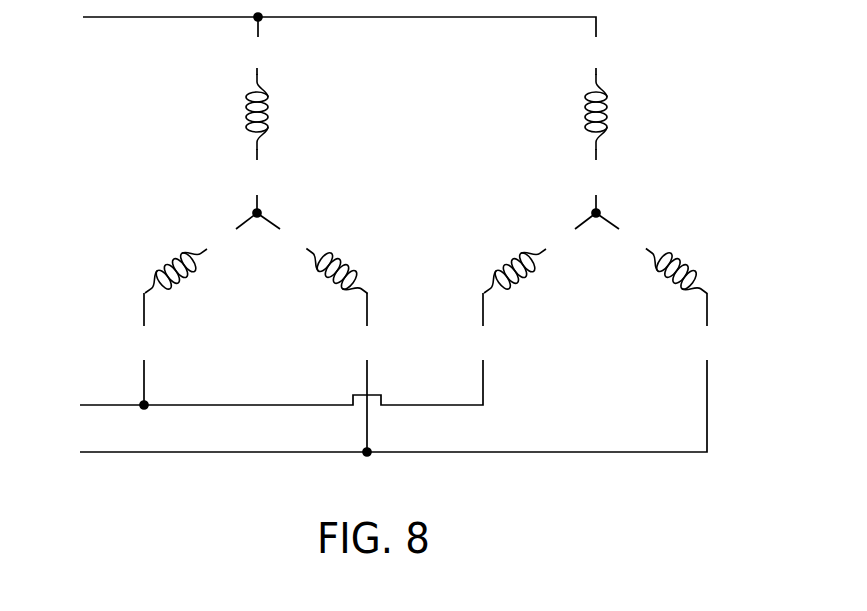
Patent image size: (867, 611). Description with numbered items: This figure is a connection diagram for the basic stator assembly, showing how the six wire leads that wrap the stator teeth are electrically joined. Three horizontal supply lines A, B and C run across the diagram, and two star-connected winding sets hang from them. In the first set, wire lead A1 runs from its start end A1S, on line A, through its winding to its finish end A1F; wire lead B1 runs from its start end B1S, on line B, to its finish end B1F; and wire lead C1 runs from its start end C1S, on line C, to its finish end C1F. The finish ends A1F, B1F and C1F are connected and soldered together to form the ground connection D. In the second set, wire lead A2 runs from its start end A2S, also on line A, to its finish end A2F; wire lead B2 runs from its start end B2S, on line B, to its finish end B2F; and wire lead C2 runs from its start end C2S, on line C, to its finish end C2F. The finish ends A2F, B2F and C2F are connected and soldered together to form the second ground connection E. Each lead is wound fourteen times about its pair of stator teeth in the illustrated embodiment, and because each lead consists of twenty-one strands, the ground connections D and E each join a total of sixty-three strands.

The phase A connection A is at (320, 19).
The phase B connection B is at (264, 392).
The phase C connection C is at (376, 416).
The ground connection D is at (243, 208).
The second ground connection E is at (582, 208).
The A1 Start A1S is at (267, 88).
The A1 Finish A1F is at (267, 189).
The B1 Finish B1F is at (228, 235).
The B1 Start B1S is at (171, 322).
The C1 Finish C1F is at (289, 235).
The C1 Start C1S is at (348, 346).
The A2 Start A2S is at (606, 99).
The A2 Finish A2F is at (606, 189).
The B2 Finish B2F is at (568, 235).
The B2 Start B2S is at (510, 302).
The C2 Finish C2F is at (629, 235).
The C2 Start C2S is at (690, 302).